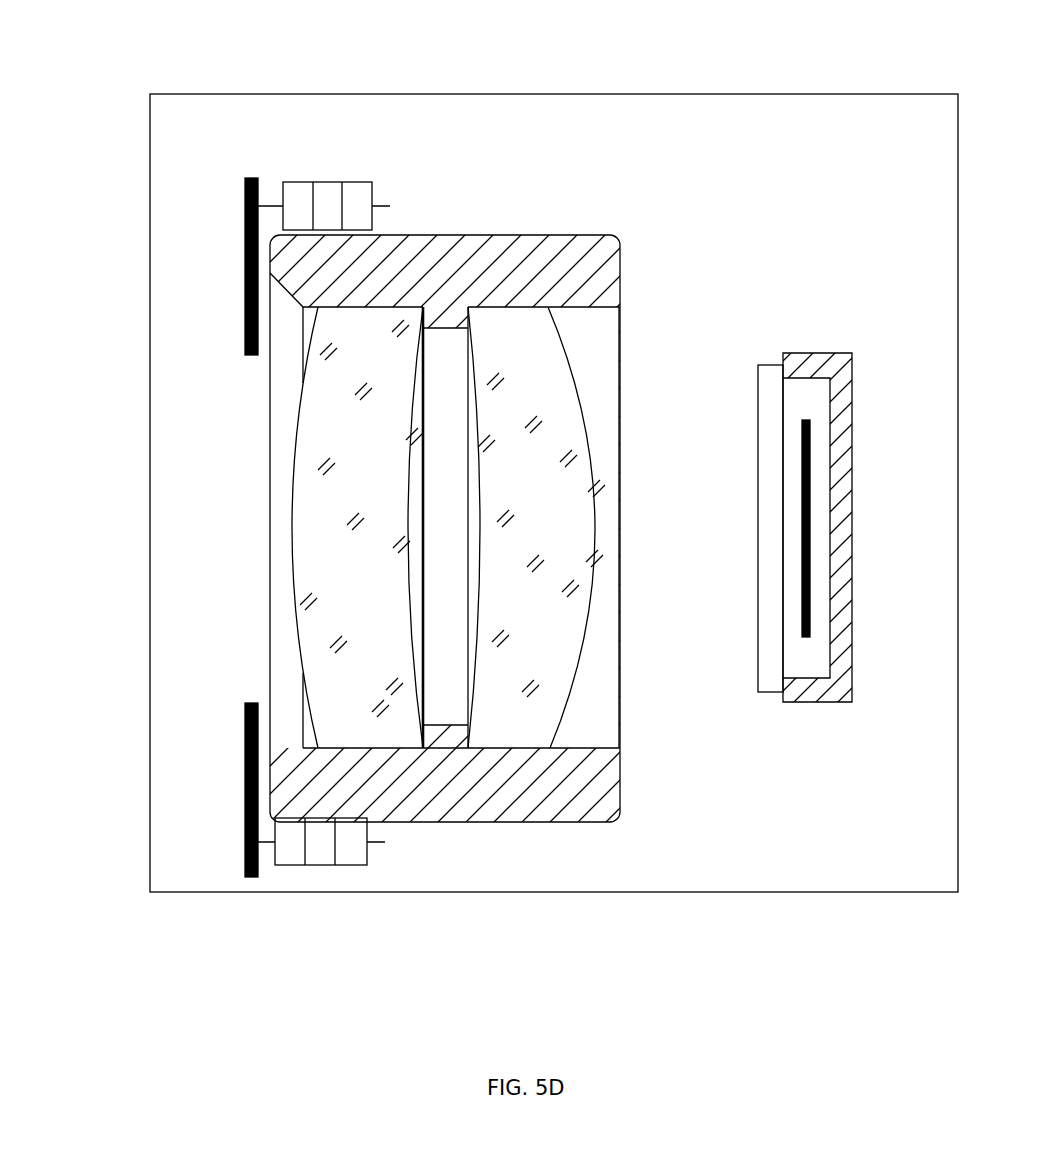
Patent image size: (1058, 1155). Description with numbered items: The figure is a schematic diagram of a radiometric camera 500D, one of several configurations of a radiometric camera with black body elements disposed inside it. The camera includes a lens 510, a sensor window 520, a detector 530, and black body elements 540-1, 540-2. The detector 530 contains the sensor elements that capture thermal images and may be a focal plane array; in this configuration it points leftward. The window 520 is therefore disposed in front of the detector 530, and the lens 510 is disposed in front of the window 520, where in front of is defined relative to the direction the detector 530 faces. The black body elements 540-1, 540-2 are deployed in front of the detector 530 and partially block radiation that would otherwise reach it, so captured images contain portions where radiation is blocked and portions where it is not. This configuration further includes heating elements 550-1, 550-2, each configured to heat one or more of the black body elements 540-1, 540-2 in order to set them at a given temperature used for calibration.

The radiometric camera 500D is at (558, 103).
The lens 510 is at (443, 236).
The sensor window 520 is at (758, 366).
The detector 530 is at (812, 582).
The black body element 540-1 is at (245, 212).
The black body element 540-2 is at (243, 783).
The heating element 550-1 is at (333, 182).
The heating element 550-2 is at (363, 855).